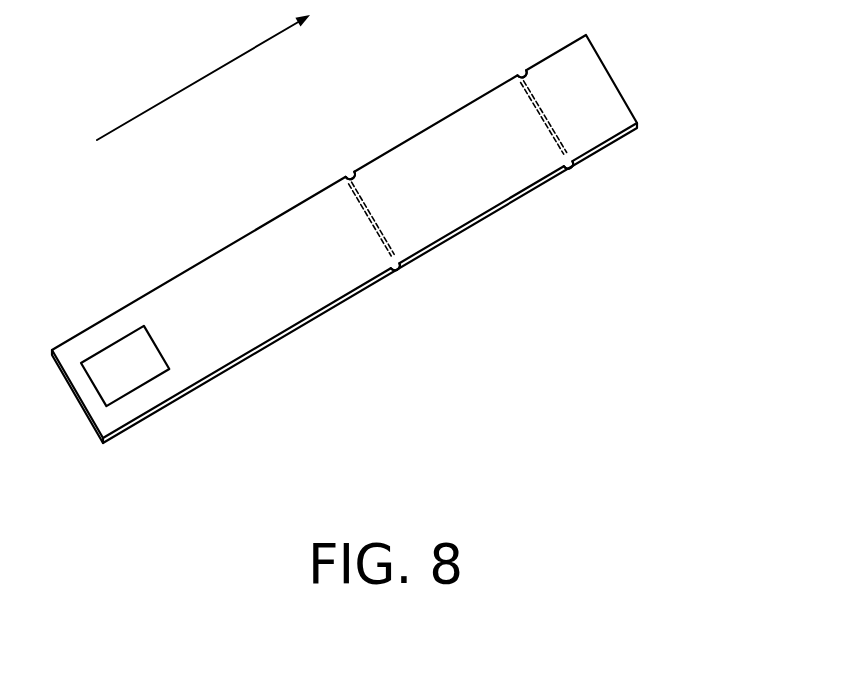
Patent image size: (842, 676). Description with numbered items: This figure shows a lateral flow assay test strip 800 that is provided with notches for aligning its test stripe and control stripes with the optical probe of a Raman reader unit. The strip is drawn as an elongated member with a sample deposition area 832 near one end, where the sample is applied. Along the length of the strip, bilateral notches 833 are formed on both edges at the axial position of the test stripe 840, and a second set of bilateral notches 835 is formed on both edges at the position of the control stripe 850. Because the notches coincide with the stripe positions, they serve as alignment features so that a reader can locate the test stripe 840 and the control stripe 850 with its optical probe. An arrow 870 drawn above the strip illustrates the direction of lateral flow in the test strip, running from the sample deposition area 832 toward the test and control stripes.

The lateral flow assay test strip 800 is at (156, 253).
The sample deposition area 832 is at (132, 375).
The bilateral notches 833 is at (338, 160).
The bilateral notches 835 is at (514, 58).
The test stripe 840 is at (398, 214).
The control stripe 850 is at (572, 113).
The arrow 870 is at (192, 85).